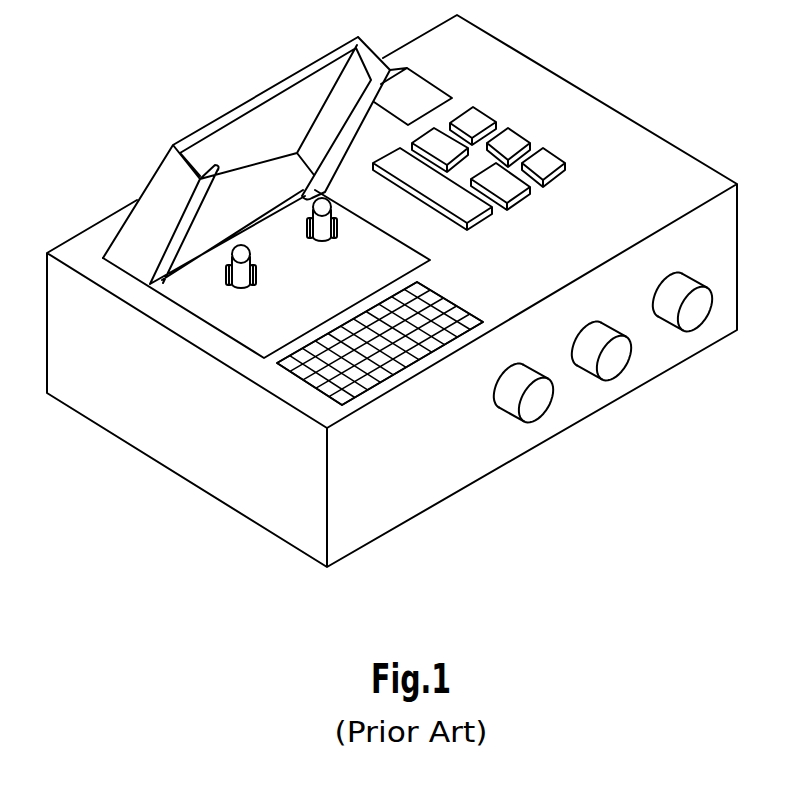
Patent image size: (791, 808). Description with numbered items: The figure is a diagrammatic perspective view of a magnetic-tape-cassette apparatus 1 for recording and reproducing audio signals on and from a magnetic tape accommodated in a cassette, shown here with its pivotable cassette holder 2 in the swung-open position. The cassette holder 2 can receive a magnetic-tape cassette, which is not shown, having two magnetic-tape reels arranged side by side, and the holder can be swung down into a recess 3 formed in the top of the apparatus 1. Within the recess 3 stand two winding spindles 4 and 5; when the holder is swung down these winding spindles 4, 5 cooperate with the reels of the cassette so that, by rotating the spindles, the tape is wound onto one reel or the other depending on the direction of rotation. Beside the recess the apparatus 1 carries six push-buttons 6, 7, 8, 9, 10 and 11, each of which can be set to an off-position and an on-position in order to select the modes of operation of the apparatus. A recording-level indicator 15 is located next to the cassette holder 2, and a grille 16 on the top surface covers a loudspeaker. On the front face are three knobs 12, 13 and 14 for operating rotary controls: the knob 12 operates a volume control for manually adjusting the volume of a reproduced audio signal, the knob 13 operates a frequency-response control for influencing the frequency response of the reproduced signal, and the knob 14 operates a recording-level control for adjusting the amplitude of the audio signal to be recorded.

The magnetic-tape-cassette apparatus 1 is at (183, 494).
The pivotable cassette holder 2 is at (237, 123).
The recess 3 is at (432, 246).
The winding spindle 4 is at (241, 287).
The winding spindle 5 is at (322, 242).
The push-button 6 is at (480, 213).
The push-button 7 is at (438, 135).
The push-button 8 is at (517, 188).
The push-button 9 is at (475, 117).
The push-button 10 is at (512, 138).
The push-button 11 is at (550, 162).
The knob 12 is at (542, 413).
The knob 13 is at (617, 367).
The knob 14 is at (697, 323).
The recording-level indicator 15 is at (402, 78).
The grille 16 is at (463, 315).